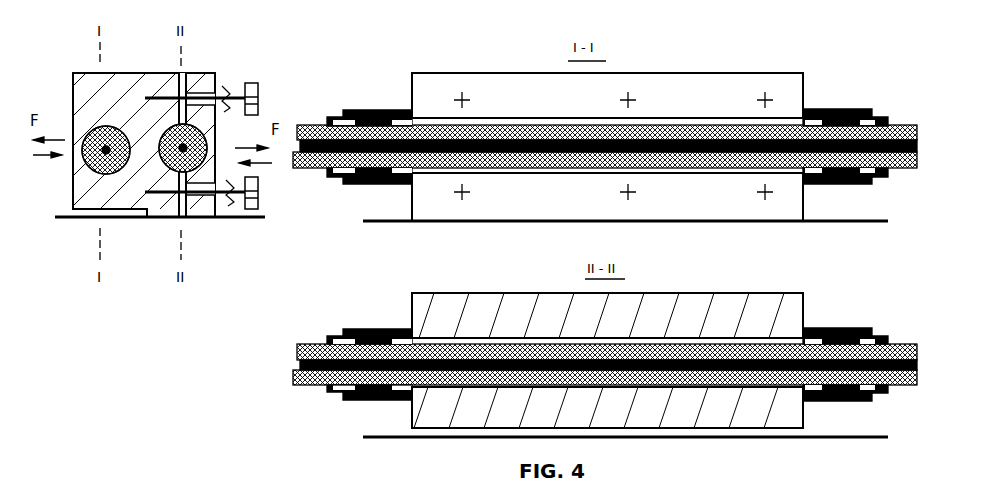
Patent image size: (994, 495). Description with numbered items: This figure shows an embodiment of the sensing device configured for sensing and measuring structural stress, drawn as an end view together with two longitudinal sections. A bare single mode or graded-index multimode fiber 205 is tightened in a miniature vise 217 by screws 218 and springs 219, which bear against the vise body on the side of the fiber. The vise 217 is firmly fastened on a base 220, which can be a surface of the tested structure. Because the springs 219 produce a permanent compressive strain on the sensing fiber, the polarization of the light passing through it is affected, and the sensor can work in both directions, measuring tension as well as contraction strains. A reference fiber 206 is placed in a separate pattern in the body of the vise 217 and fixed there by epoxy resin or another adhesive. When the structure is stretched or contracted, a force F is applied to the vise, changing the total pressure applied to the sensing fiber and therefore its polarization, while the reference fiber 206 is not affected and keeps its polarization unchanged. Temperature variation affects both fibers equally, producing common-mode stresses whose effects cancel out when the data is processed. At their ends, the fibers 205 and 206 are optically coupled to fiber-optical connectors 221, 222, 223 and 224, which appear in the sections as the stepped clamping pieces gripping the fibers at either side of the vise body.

The bare single mode or graded-index multimode fiber 205 is at (209, 155).
The reference fiber 206 is at (108, 126).
The miniature vise 217 is at (183, 220).
The screws 218 is at (259, 95).
The springs 219 is at (226, 90).
The base 220 is at (138, 219).
The fiber-optical connector 221 is at (368, 110).
The fiber-optical connector 222 is at (837, 108).
The fiber-optical connector 223 is at (352, 399).
The fiber-optical connector 224 is at (820, 328).